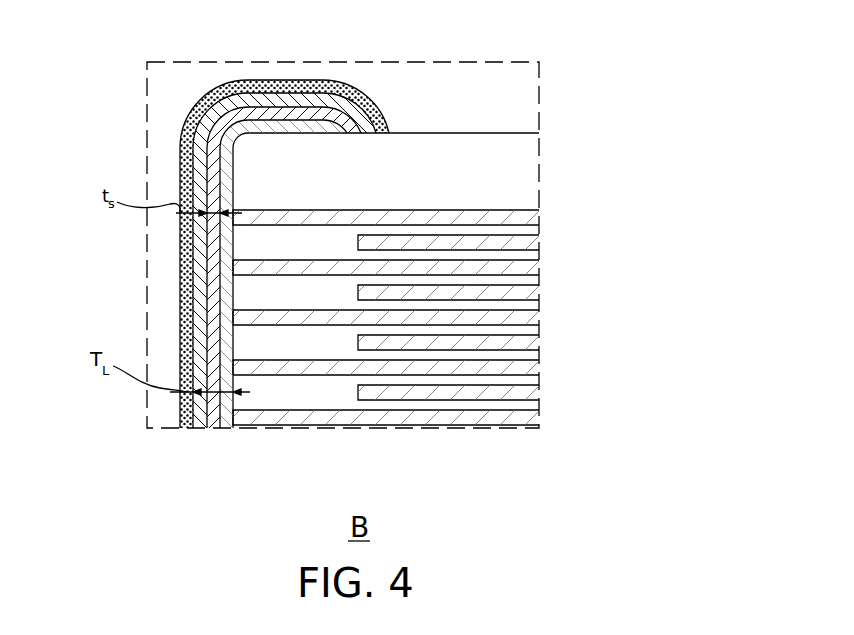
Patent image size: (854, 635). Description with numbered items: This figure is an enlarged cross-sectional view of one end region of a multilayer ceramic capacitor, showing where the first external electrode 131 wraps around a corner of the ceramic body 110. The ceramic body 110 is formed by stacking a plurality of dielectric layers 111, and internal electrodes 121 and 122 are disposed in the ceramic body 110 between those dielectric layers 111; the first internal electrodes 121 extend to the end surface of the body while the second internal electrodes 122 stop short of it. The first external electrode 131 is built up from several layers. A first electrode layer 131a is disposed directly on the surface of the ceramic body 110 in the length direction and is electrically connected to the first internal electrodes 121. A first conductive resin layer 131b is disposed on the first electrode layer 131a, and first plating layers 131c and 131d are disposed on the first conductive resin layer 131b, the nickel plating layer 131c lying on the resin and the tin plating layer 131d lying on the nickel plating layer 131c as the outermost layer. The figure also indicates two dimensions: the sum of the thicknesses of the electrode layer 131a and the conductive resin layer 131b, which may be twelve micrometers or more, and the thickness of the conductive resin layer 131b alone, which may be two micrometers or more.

The ceramic body 110 is at (485, 133).
The dielectric layer 111 is at (538, 278).
The first internal electrode 121 is at (542, 214).
The second internal electrode 122 is at (542, 242).
The first external electrode 131 is at (227, 310).
The first electrode layer 131a is at (283, 306).
The first conductive resin layer 131b is at (213, 428).
The nickel plating layer 131c is at (178, 428).
The tin plating layer 131d is at (180, 399).